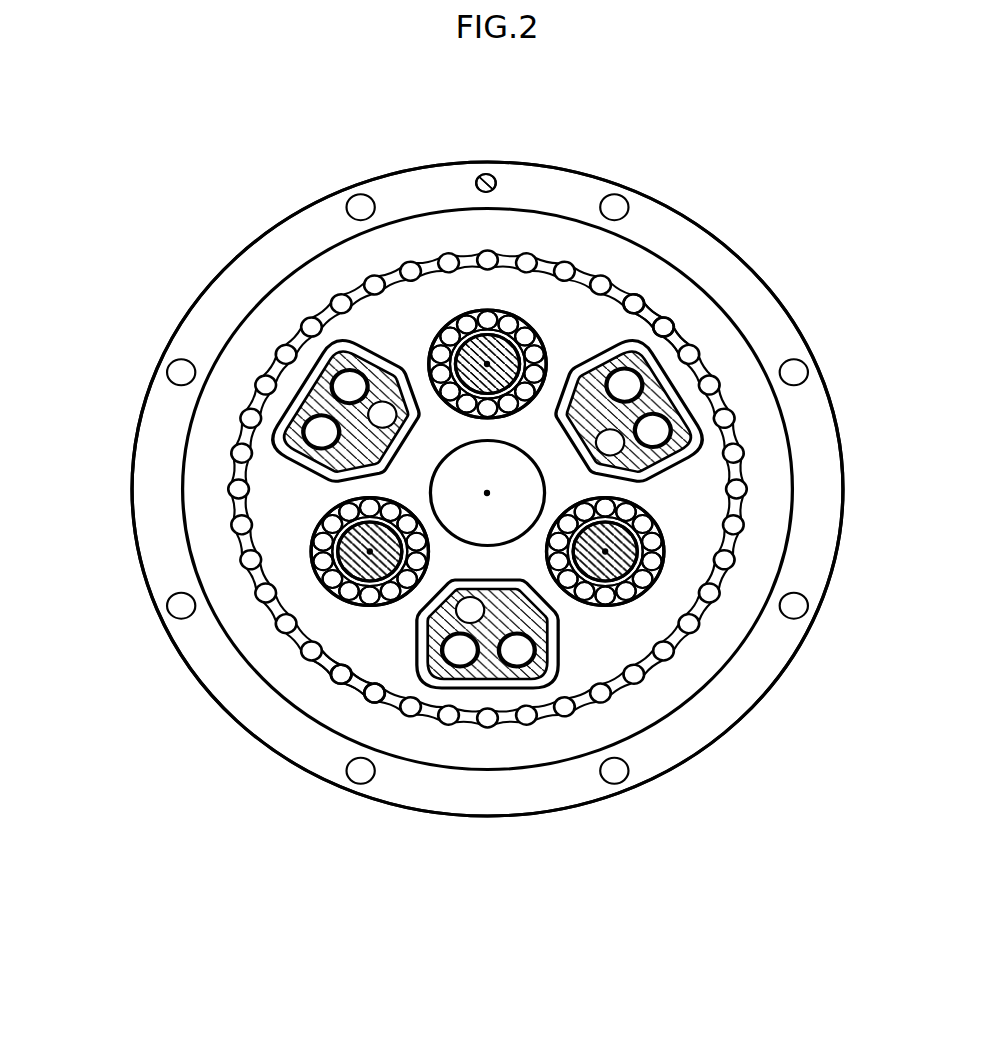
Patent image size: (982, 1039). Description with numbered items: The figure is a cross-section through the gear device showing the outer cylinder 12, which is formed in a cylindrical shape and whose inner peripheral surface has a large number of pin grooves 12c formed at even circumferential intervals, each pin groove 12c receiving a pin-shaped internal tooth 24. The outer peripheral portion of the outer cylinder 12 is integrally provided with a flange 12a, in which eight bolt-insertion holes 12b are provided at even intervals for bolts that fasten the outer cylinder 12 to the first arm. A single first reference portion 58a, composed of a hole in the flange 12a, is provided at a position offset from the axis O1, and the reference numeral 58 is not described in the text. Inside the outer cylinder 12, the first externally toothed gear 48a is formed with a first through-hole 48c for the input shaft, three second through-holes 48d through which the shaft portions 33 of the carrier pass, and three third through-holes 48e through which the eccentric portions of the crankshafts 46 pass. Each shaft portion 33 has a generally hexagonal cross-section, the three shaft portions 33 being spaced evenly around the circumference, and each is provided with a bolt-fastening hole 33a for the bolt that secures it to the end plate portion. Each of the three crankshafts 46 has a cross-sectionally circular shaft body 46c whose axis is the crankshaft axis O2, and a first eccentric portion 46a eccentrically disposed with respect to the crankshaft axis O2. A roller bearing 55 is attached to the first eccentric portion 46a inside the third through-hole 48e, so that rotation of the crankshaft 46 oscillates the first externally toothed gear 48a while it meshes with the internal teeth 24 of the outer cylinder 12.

The outer cylinder 12 is at (776, 681).
The flange 12a is at (796, 653).
The bolt-insertion holes 12b is at (193, 371).
The pin grooves 12c is at (686, 362).
The internal teeth 24 is at (270, 592).
The shaft portion 33 is at (378, 360).
The bolt-fastening hole 33a is at (540, 372).
The crankshaft 46 is at (487, 458).
The first eccentric portion 46a is at (627, 350).
The shaft body 46c is at (460, 325).
The first externally toothed gear 48a is at (540, 287).
The first through-hole 48c is at (465, 446).
The second through-hole 48d is at (305, 430).
The third through-hole 48e is at (462, 347).
The roller bearing 55 is at (467, 413).
The fastening screw 58 is at (486, 183).
The first reference portion 58a is at (486, 173).
The axis O1 is at (487, 493).
The crankshaft axis O2 is at (487, 364).